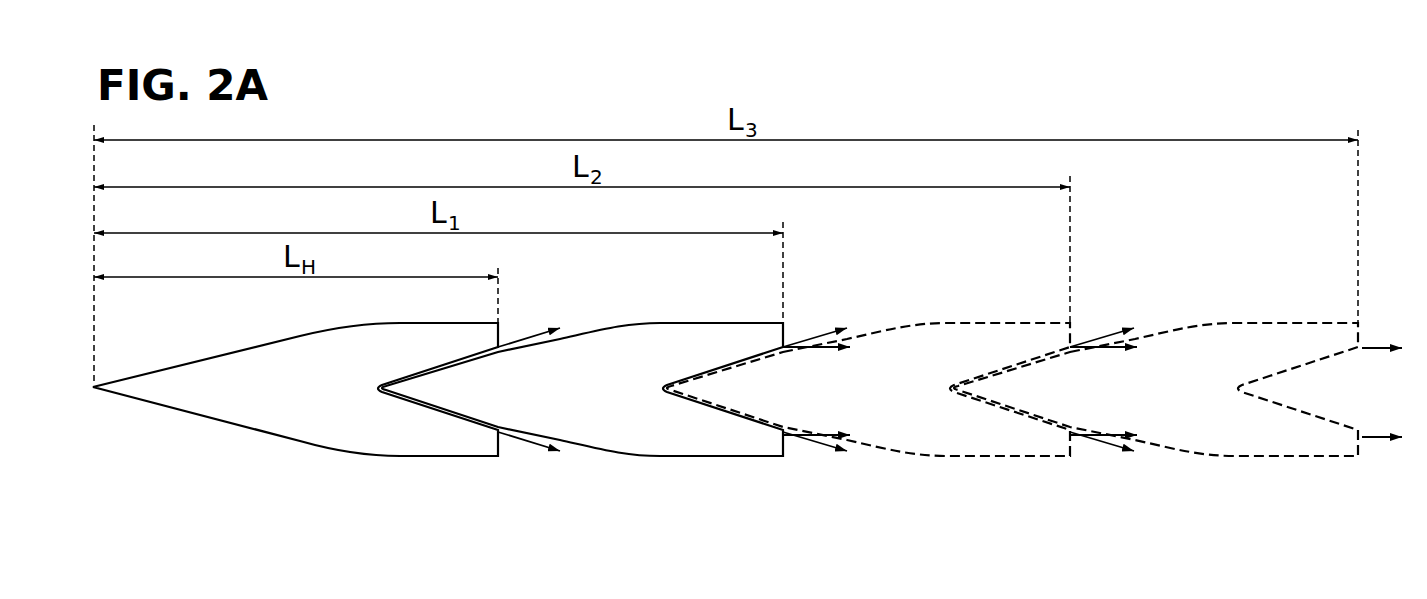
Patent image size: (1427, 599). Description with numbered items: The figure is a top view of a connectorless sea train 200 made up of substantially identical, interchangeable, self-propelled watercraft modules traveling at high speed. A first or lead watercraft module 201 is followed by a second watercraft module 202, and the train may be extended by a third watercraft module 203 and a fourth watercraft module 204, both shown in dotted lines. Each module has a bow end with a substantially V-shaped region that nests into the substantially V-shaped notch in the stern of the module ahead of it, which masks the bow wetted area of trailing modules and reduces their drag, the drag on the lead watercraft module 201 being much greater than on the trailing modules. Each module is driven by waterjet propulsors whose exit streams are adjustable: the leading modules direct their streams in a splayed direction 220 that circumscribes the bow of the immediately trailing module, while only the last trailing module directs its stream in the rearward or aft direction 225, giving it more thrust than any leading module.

The connectorless sea train 200 is at (725, 440).
The first or lead watercraft module 201 is at (199, 421).
The second watercraft module 202 is at (662, 461).
The third watercraft module 203 is at (948, 461).
The fourth watercraft module 204 is at (1236, 462).
The splayed direction 220 is at (533, 333).
The rearward/aft direction 225 is at (838, 433).